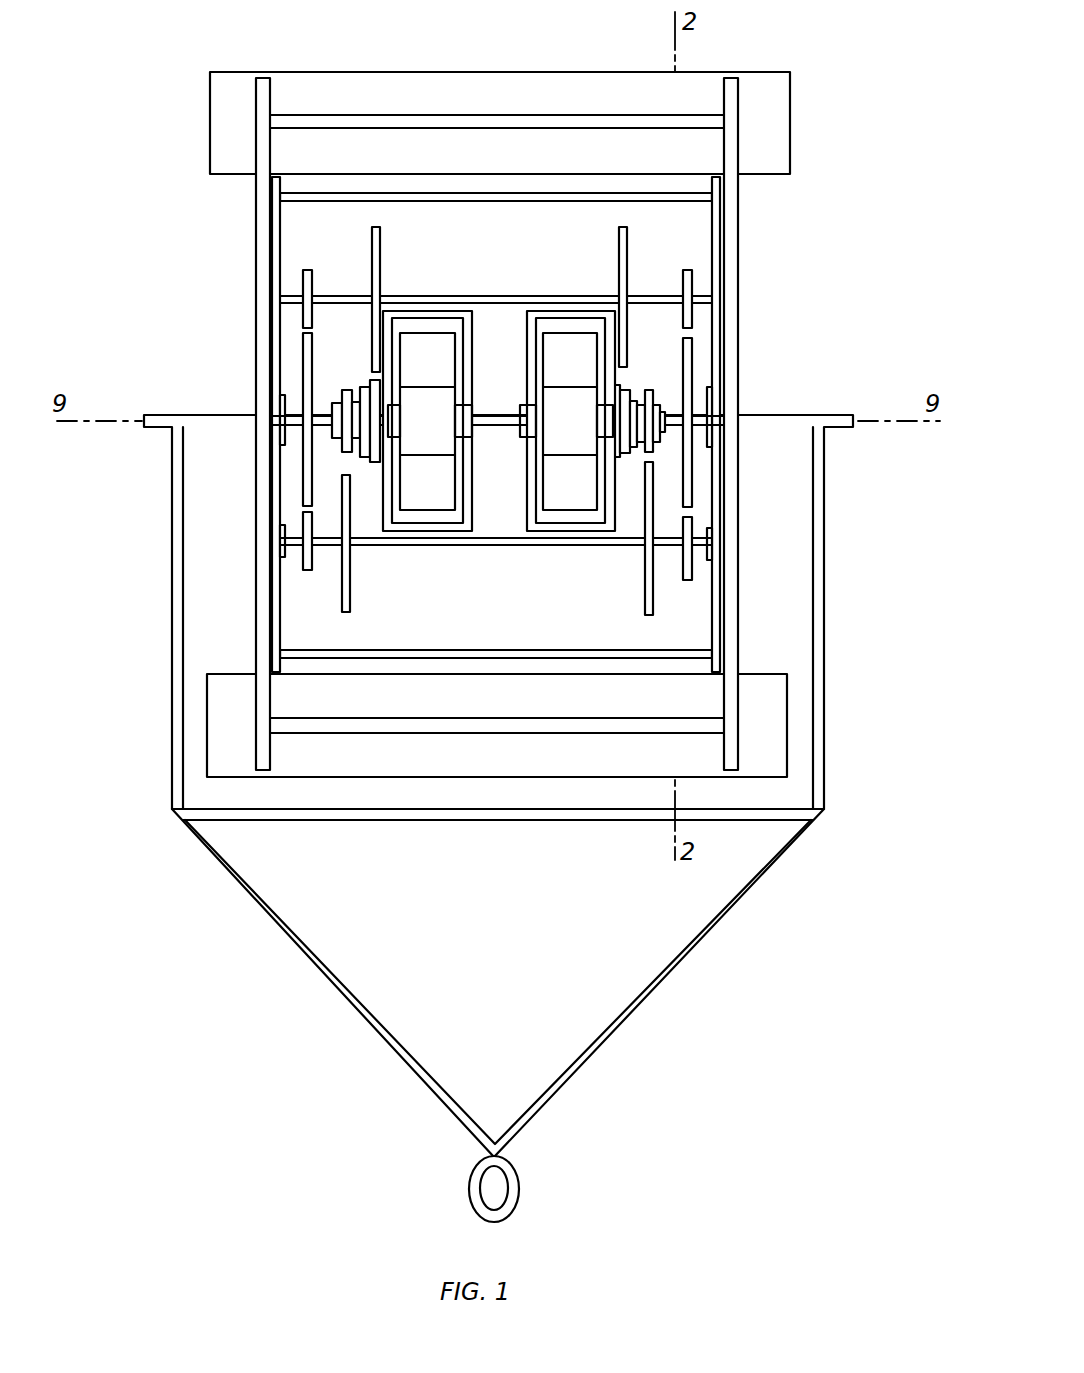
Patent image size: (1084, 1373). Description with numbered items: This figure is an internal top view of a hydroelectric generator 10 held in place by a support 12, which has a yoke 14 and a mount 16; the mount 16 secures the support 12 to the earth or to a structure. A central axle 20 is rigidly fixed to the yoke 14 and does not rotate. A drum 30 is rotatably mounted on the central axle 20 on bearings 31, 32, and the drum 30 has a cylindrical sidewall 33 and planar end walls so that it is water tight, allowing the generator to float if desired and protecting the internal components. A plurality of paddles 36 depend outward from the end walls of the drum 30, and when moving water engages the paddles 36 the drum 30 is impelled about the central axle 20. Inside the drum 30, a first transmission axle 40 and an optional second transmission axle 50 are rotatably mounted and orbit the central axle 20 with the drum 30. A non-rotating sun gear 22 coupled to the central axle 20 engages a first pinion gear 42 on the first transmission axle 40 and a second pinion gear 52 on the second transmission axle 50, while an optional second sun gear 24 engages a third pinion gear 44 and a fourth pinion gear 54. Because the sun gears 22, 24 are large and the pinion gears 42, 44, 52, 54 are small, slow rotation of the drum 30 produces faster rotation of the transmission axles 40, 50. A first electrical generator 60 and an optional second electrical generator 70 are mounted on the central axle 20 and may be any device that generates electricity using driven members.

The hydroelectric generator 10 is at (845, 60).
The support 12 is at (665, 990).
The yoke 14 is at (824, 602).
The mount 16 is at (517, 1189).
The central axle 20 is at (775, 416).
The sun gear 22 is at (683, 358).
The second sun gear 24 is at (312, 358).
The drum 30 is at (756, 291).
The bearing 31 is at (722, 392).
The bearing 32 is at (282, 390).
The cylindrical sidewall 33 is at (366, 194).
The paddles 36 is at (768, 72).
The first transmission axle 40 is at (437, 297).
The first pinion gear 42 is at (683, 274).
The third pinion gear 44 is at (312, 272).
The second transmission axle 50 is at (400, 548).
The second pinion gear 52 is at (690, 582).
The fourth pinion gear 54 is at (305, 572).
The first electrical generator 60 is at (527, 352).
The second electrical generator 70 is at (472, 490).